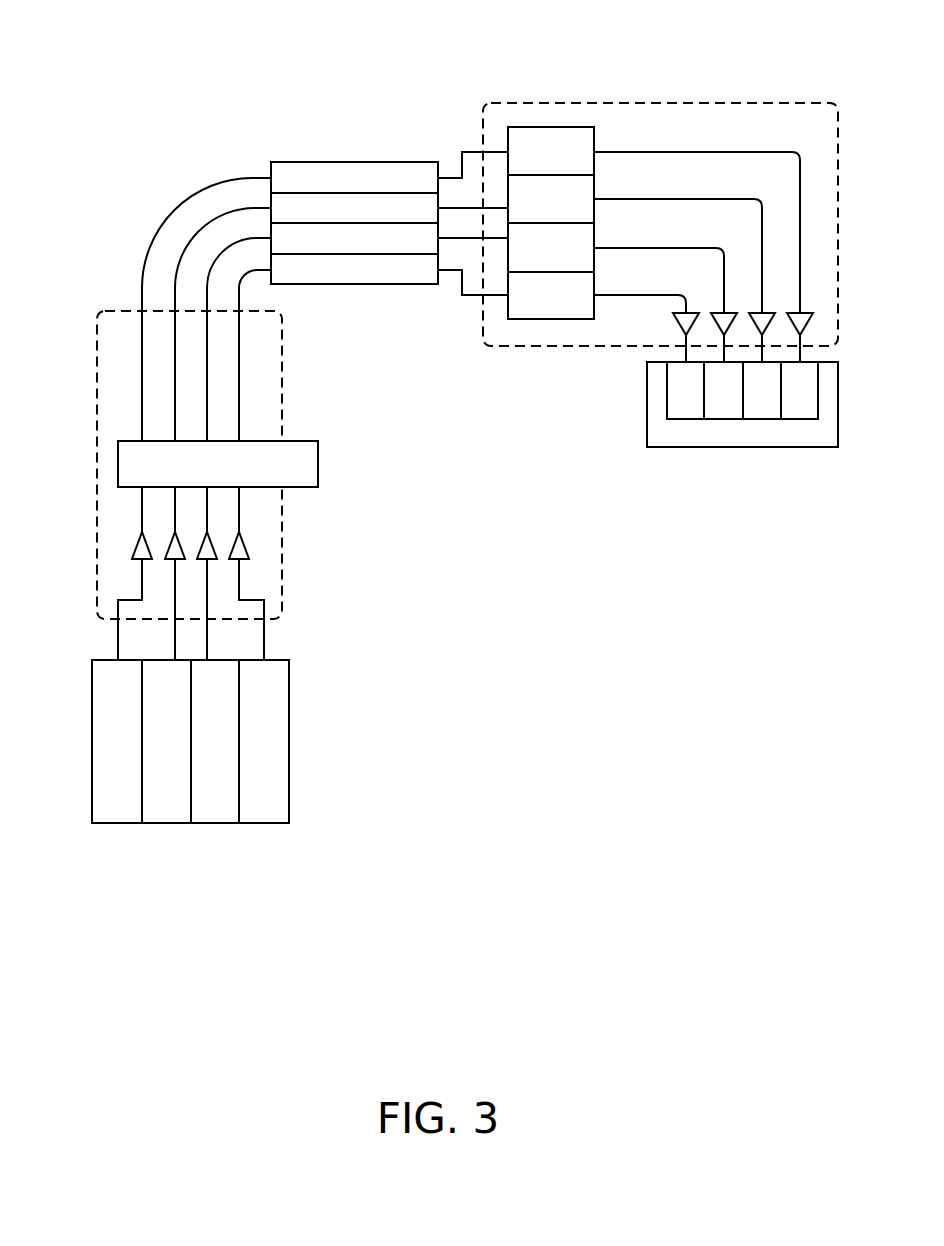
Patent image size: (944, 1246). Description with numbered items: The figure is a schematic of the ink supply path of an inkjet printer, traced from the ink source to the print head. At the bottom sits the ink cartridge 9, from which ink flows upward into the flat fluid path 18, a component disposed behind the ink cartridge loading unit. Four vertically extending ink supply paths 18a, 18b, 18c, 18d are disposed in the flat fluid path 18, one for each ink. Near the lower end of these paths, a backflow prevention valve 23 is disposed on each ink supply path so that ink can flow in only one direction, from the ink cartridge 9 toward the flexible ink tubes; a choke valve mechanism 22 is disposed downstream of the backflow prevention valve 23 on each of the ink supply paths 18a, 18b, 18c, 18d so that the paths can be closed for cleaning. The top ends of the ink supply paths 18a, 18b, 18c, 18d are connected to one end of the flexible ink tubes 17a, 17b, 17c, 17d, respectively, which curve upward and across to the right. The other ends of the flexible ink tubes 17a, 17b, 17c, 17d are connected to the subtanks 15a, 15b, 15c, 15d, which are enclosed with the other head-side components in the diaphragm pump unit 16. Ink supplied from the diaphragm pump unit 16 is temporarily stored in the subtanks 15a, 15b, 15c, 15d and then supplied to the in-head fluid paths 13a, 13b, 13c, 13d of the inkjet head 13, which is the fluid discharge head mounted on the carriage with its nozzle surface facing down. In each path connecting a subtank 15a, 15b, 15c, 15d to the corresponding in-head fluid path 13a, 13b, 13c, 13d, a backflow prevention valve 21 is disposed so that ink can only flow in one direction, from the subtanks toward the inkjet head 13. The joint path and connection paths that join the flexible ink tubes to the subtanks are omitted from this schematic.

The ink cartridge 9 is at (312, 727).
The inkjet head 13 is at (761, 450).
The in-head fluid path 13a is at (679, 413).
The in-head fluid path 13b is at (727, 413).
The in-head fluid path 13c is at (757, 413).
The in-head fluid path 13d is at (803, 413).
The subtank 15a is at (540, 320).
The subtank 15b is at (616, 268).
The subtank 15c is at (635, 244).
The subtank 15d is at (551, 127).
The diaphragm pump unit 16 is at (768, 103).
The flexible ink tube 17a is at (362, 272).
The flexible ink tube 17b is at (389, 245).
The flexible ink tube 17c is at (375, 208).
The flexible ink tube 17d is at (325, 178).
The flat fluid path 18 is at (117, 311).
The ink supply path 18a is at (241, 420).
The ink supply path 18b is at (208, 386).
The ink supply path 18c is at (172, 402).
The ink supply path 18d is at (142, 412).
The backflow prevention valve 21 is at (813, 325).
The choke valve mechanism 22 is at (318, 454).
The backflow prevention valve 23 is at (248, 543).